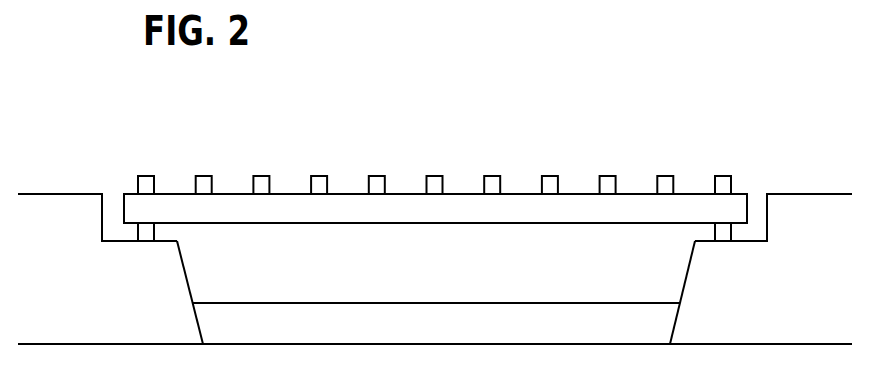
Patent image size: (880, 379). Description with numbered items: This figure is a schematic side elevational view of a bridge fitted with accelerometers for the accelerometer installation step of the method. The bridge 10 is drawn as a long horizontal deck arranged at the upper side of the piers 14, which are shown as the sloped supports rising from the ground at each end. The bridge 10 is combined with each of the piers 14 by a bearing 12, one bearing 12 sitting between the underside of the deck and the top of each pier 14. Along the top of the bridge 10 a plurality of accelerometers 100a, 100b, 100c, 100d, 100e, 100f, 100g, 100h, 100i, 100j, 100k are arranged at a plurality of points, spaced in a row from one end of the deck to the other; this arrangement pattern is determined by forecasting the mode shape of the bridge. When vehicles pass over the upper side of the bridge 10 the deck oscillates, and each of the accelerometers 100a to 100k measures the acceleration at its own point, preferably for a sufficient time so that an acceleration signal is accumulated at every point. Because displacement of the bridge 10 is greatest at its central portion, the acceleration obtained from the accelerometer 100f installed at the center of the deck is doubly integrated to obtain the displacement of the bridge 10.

The bridge 10 is at (435, 224).
The bearing 12 is at (147, 238).
The pier 14 is at (185, 277).
The accelerometer 100a is at (147, 176).
The accelerometer 100b is at (205, 176).
The accelerometer 100c is at (262, 176).
The accelerometer 100d is at (320, 176).
The accelerometer 100e is at (378, 176).
The accelerometer 100f is at (436, 176).
The accelerometer 100g is at (493, 176).
The accelerometer 100h is at (551, 176).
The accelerometer 100i is at (609, 176).
The accelerometer 100j is at (666, 176).
The accelerometer 100k is at (724, 176).